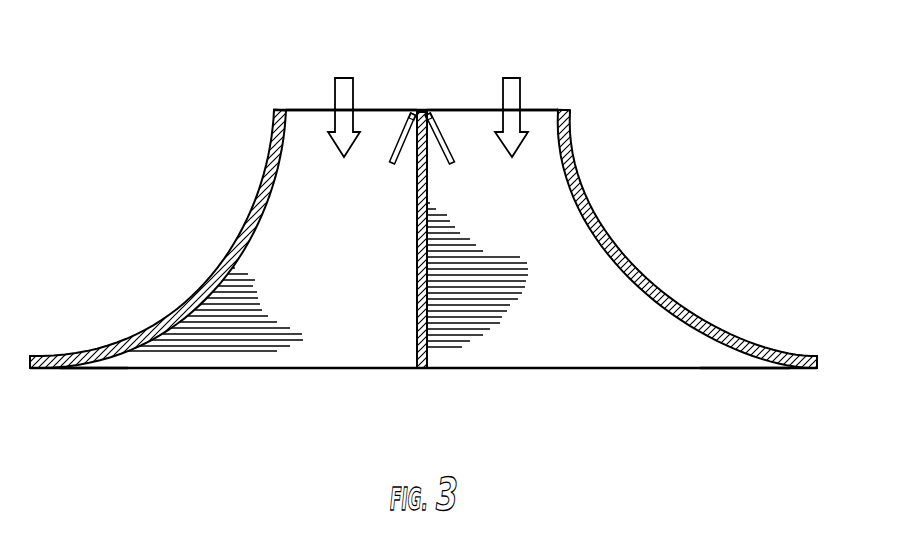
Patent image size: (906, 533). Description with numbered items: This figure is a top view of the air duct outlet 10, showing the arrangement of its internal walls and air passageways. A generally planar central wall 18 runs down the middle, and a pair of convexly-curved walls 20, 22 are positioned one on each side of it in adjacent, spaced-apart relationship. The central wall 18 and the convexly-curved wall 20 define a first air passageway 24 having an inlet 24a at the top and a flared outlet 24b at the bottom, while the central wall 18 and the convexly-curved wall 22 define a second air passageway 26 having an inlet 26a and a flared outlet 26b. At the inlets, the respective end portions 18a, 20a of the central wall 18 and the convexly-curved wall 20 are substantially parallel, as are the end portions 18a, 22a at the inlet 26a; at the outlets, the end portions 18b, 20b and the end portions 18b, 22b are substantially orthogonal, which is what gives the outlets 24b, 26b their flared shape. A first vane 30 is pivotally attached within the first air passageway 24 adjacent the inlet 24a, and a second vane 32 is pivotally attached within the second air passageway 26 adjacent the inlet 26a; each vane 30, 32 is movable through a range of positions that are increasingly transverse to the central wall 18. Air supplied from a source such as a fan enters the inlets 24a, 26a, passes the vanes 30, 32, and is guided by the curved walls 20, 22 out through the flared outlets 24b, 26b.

The air duct outlet 10 is at (570, 73).
The central wall 18 is at (417, 260).
The end portion of central wall 18a is at (422, 110).
The end portion of central wall 18b is at (420, 368).
The convexly-curved wall 20 is at (640, 280).
The end portion of convexly-curved wall 20a is at (567, 108).
The end portion of convexly-curved wall 20b is at (806, 357).
The convexly-curved wall 22 is at (220, 263).
The end portion of convexly-curved wall 22a is at (275, 112).
The end portion of convexly-curved wall 22b is at (37, 357).
The first air passageway 24 is at (530, 205).
The inlet 24a is at (532, 110).
The flared outlet 24b is at (763, 368).
The second air passageway 26 is at (317, 167).
The inlet 26a is at (296, 108).
The flared outlet 26b is at (89, 368).
The first vane 30 is at (442, 143).
The second vane 32 is at (403, 135).